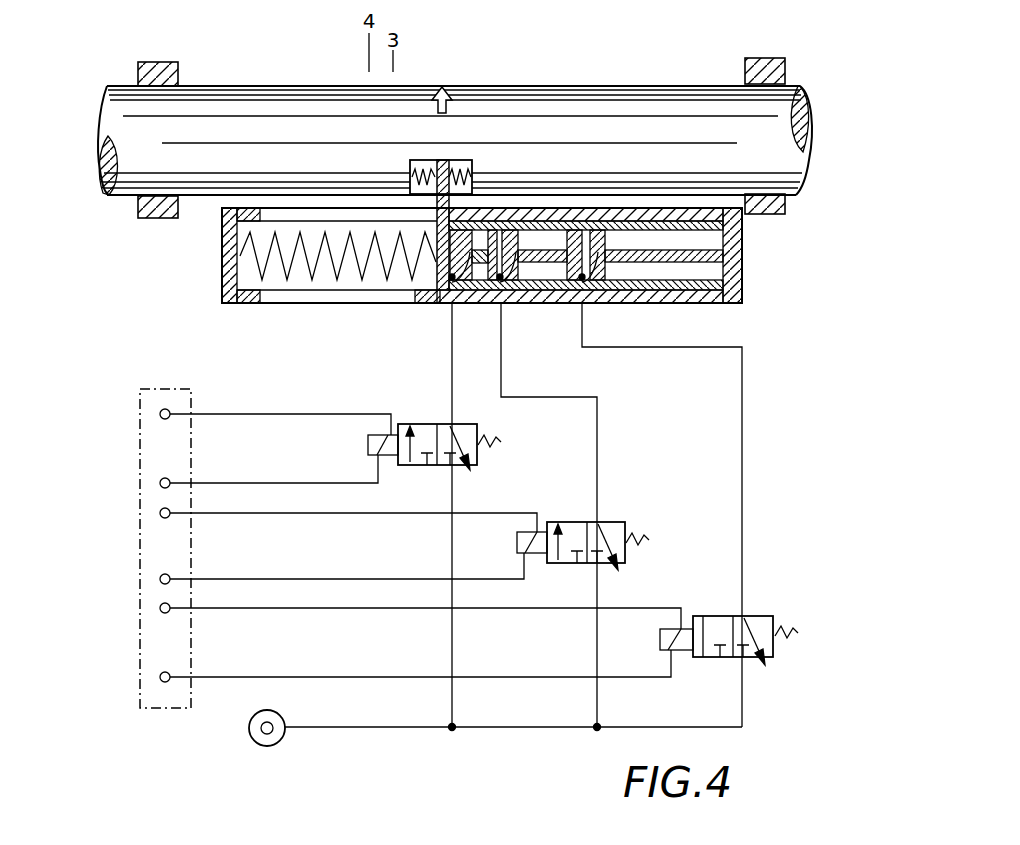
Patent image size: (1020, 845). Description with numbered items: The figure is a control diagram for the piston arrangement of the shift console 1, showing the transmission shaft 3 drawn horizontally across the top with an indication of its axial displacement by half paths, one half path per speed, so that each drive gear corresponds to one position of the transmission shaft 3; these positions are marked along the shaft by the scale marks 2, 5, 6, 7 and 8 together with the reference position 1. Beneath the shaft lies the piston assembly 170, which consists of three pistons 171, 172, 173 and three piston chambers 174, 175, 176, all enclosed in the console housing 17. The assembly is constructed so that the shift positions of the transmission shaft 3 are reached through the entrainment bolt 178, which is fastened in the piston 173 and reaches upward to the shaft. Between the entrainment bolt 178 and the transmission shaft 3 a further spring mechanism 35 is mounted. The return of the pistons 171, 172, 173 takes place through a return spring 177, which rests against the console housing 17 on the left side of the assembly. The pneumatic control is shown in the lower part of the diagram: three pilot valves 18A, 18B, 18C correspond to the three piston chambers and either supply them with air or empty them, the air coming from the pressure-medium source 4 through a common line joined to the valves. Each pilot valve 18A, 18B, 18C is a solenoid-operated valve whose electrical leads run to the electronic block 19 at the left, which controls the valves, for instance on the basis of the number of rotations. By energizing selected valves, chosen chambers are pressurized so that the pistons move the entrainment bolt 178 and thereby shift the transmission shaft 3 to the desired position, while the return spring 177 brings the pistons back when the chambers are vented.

The shift console 1 is at (442, 72).
The rod position mark 2 is at (418, 72).
The transmission shaft 3 is at (673, 102).
The pressure-medium source 4 is at (266, 746).
The rod position mark 5 is at (344, 72).
The rod position mark 6 is at (319, 72).
The rod position mark 7 is at (295, 72).
The rod position mark 8 is at (272, 72).
The console housing 17 is at (740, 238).
The pilot valve 18A is at (472, 462).
The pilot valve 18B is at (620, 522).
The pilot valve 18C is at (765, 616).
The electronic block 19 is at (183, 708).
The spring mechanism 35 is at (474, 162).
The piston assembly 170 is at (539, 243).
The piston 171 is at (650, 292).
The piston 172 is at (546, 303).
The piston 173 is at (432, 305).
The piston chamber 174 is at (588, 298).
The piston chamber 175 is at (511, 303).
The piston chamber 176 is at (460, 303).
The return spring 177 is at (323, 262).
The entrainment bolt 178 is at (447, 160).